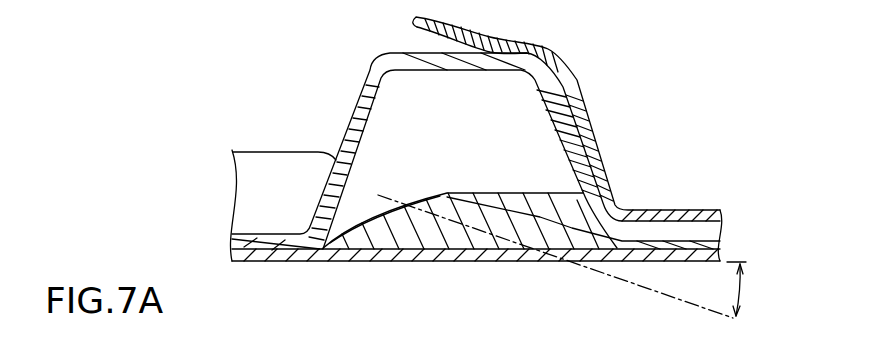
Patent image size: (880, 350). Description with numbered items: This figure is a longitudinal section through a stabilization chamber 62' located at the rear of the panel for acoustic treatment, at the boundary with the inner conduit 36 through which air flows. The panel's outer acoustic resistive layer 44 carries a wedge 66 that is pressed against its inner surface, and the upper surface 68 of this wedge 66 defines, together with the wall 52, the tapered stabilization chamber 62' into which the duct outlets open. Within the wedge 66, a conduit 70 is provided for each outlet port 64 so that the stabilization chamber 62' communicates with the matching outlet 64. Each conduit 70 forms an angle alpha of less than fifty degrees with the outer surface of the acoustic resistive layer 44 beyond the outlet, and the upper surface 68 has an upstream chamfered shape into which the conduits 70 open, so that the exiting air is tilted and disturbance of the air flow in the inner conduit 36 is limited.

The inner conduit 36 is at (364, 239).
The acoustic resistive layer 44 is at (347, 257).
The wall 52 is at (574, 133).
The stabilization chamber 62' is at (566, 119).
The outlet port 64 is at (542, 250).
The wedge 66 is at (622, 208).
The upper surface 68 is at (447, 193).
The conduit 70 is at (463, 228).